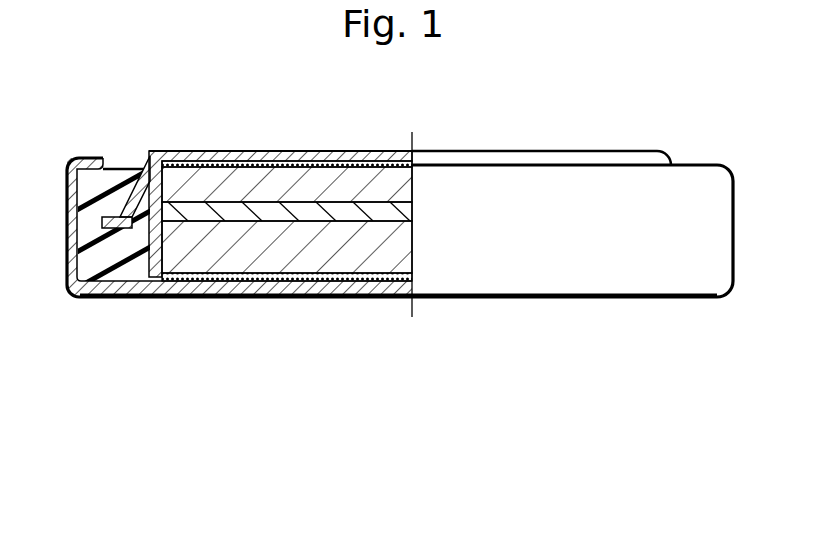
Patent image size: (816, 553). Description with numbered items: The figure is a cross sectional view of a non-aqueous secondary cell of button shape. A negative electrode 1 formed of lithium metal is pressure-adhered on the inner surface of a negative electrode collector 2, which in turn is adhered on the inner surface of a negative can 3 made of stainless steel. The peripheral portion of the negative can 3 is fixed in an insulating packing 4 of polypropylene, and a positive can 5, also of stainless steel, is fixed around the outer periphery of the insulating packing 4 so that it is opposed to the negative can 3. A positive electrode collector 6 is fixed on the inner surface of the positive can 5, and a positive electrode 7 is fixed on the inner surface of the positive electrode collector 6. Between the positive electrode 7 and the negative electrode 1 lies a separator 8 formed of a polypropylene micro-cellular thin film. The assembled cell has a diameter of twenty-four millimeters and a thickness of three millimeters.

The negative electrode 1 is at (303, 183).
The negative electrode collector 2 is at (354, 166).
The negative can 3 is at (257, 151).
The insulating packing 4 is at (107, 182).
The positive can 5 is at (137, 300).
The positive electrode collector 6 is at (247, 278).
The positive electrode 7 is at (290, 255).
The separator 8 is at (188, 151).